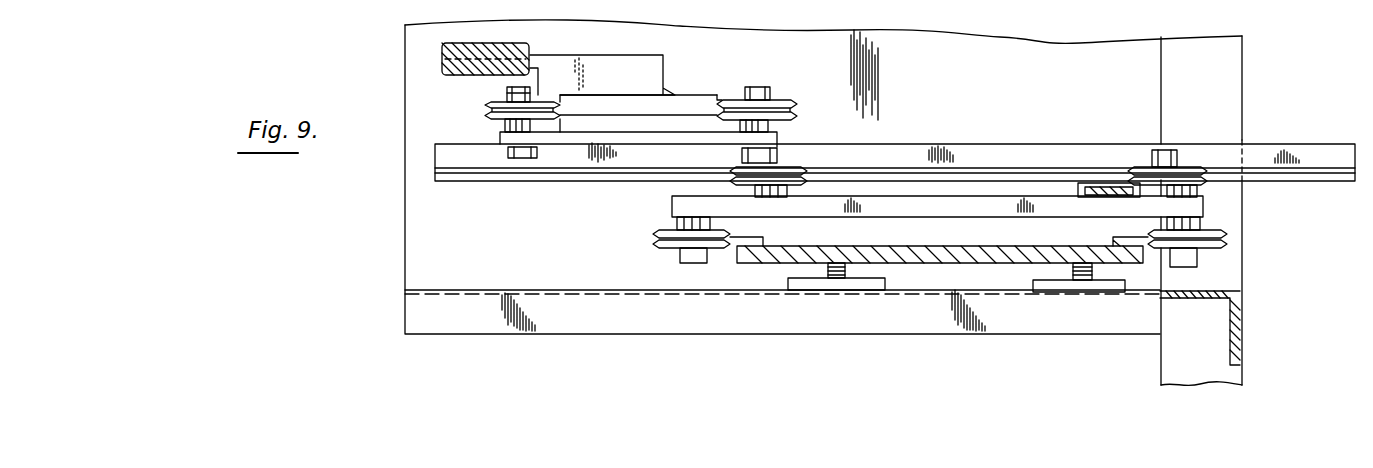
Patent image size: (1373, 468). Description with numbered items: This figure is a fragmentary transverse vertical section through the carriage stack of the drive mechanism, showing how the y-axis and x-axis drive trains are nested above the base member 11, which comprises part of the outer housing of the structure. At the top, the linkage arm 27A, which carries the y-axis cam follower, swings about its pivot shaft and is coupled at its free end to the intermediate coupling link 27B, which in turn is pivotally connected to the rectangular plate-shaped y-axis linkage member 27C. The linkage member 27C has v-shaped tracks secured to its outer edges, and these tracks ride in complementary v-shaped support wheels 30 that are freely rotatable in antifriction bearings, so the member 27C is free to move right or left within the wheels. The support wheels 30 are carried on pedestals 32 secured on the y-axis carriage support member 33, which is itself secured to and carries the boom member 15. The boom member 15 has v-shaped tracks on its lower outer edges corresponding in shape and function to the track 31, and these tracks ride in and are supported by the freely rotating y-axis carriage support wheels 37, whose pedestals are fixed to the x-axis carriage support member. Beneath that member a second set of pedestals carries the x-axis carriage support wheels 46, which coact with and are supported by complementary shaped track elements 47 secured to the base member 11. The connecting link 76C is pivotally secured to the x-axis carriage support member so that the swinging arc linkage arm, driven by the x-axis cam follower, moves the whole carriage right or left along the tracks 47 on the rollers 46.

The base member 11 is at (1240, 311).
The boom member 15 is at (437, 159).
The linkage arm 27A is at (512, 46).
The intermediate coupling link 27B is at (571, 62).
The y-axis linkage member 27C is at (697, 100).
The support wheels 30 is at (487, 104).
The track 31 is at (560, 172).
The pedestals 32 is at (500, 126).
The y-axis carriage support member 33 is at (601, 147).
The y-axis carriage support wheels 37 is at (800, 170).
The x-axis carriage support wheels 46 is at (655, 235).
The track elements 47 is at (758, 241).
The connecting link 76C is at (1107, 185).